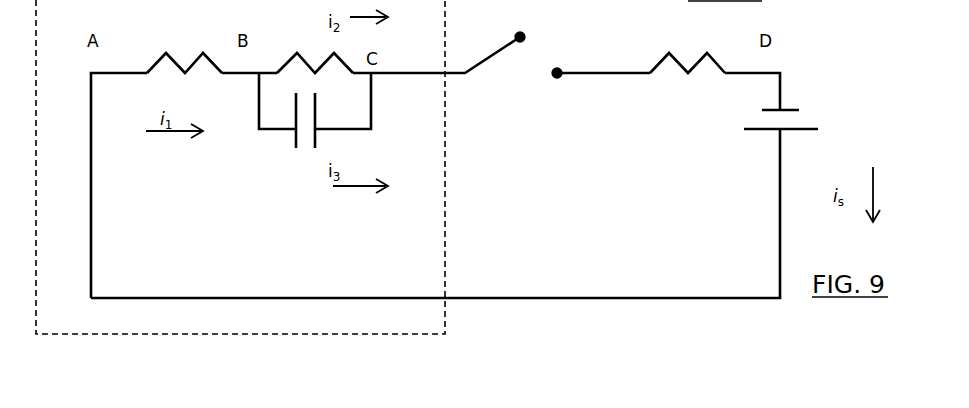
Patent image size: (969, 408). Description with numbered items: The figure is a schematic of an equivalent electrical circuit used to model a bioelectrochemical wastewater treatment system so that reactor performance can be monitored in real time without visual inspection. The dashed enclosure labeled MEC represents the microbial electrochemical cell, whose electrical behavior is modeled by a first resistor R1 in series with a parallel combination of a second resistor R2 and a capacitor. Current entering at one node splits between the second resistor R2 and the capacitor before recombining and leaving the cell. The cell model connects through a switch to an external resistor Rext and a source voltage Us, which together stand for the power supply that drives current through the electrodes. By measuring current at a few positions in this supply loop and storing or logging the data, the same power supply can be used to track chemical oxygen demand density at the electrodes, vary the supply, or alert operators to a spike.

The first resistor R1 is at (184, 42).
The second resistor R2 is at (315, 42).
The external resistor Rext is at (686, 52).
The source voltage Us is at (863, 119).
The microbial electrochemical cell MEC is at (240, 167).